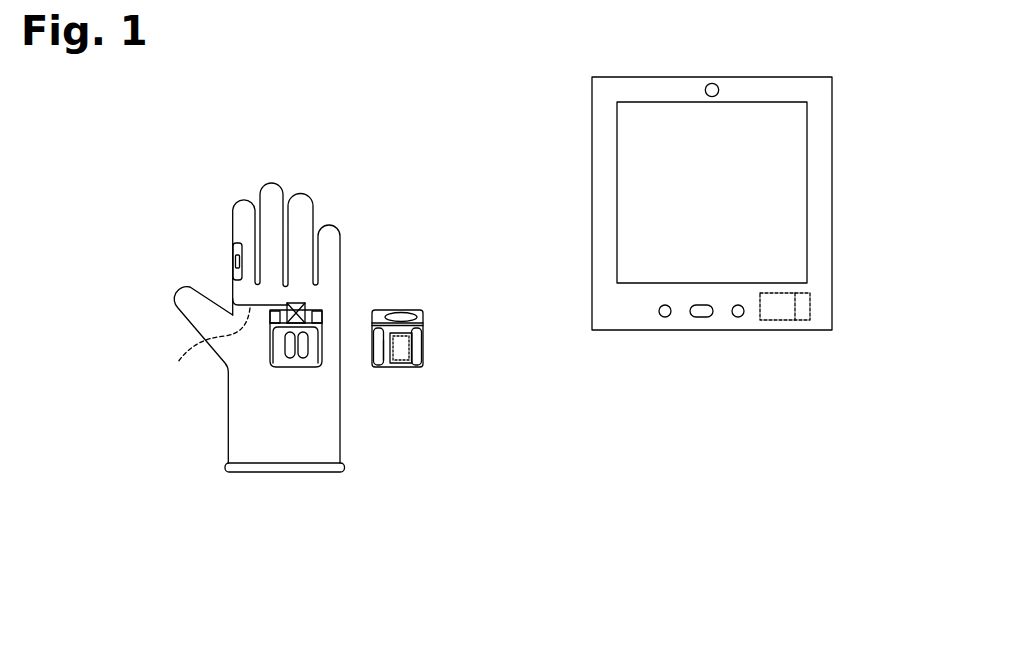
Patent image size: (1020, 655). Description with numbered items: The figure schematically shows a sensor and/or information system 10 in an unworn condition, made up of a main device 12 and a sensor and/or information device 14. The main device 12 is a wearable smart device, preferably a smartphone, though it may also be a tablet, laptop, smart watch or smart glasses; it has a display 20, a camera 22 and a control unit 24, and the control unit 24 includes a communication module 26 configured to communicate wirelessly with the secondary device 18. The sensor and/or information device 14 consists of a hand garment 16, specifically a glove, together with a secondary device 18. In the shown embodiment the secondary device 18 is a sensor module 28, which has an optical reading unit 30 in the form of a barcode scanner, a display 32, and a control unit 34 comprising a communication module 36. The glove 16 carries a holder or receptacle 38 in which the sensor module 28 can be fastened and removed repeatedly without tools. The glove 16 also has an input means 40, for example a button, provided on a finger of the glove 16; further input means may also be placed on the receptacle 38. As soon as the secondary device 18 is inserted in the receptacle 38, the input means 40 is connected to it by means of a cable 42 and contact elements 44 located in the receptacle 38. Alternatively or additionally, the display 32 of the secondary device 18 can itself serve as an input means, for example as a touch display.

The sensor and/or information system 10 is at (400, 134).
The main device 12 is at (832, 110).
The sensor and/or information device 14 is at (372, 459).
The hand garment 16 is at (247, 423).
The secondary device 18 is at (418, 284).
The display 20 is at (787, 190).
The camera 22 is at (705, 90).
The control unit 24 is at (780, 310).
The communication module 26 is at (802, 302).
The sensor module 28 is at (402, 367).
The optical reading unit 30 is at (423, 317).
The display 32 is at (405, 348).
The control unit 34 is at (385, 310).
The communication module 36 is at (387, 367).
The holder or receptacle 38 is at (303, 345).
The input means 40 is at (233, 262).
The cable 42 is at (206, 351).
The contact elements 44 is at (300, 306).